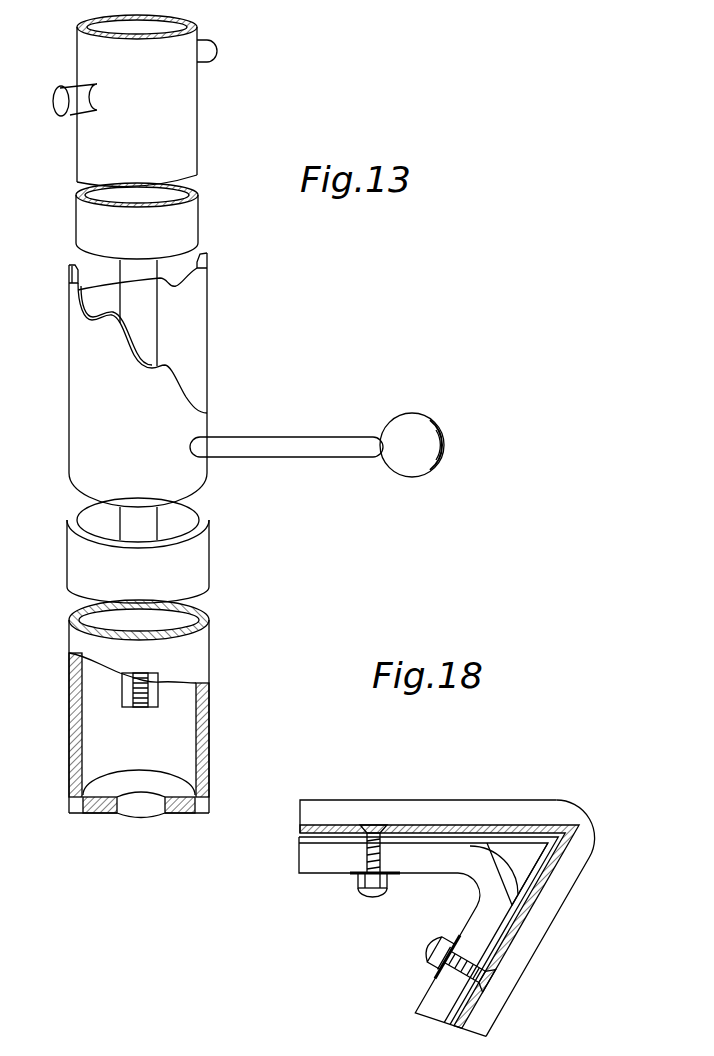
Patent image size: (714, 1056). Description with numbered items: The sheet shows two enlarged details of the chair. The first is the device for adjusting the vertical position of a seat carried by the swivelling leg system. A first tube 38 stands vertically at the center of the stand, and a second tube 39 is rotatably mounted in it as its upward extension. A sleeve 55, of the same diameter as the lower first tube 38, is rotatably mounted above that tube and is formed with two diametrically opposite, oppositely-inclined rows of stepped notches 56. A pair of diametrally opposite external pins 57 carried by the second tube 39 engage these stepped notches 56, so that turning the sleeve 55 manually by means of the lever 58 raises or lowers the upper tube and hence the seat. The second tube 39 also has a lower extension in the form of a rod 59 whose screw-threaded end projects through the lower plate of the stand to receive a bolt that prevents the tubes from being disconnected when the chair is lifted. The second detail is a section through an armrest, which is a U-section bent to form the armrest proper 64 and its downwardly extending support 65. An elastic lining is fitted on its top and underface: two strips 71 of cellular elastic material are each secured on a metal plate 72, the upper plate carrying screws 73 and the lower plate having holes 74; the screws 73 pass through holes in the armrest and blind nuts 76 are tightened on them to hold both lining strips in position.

In FIG. 13, the first tube 38 is at (202, 728).
In FIG. 13, the second tube 39 is at (192, 130).
In FIG. 13, the sleeve 55 is at (113, 380).
In FIG. 13, the stepped notches 56 is at (78, 291).
In FIG. 13, the external pins 57 is at (205, 50).
In FIG. 13, the lever 58 is at (309, 443).
In FIG. 13, the rod 59 is at (150, 333).
In FIG. 18, the armrest proper 64 is at (520, 838).
In FIG. 18, the support 65 is at (553, 882).
In FIG. 18, the strips 71 is at (470, 812).
In FIG. 18, the metal plate 72 is at (423, 826).
In FIG. 18, the screws 73 is at (378, 826).
In FIG. 18, the holes 74 is at (483, 950).
In FIG. 18, the blind nuts 76 is at (432, 953).